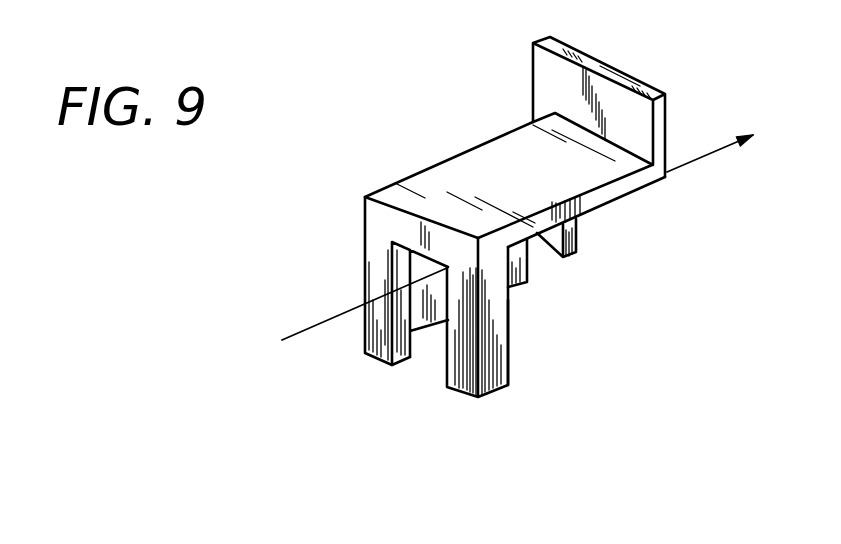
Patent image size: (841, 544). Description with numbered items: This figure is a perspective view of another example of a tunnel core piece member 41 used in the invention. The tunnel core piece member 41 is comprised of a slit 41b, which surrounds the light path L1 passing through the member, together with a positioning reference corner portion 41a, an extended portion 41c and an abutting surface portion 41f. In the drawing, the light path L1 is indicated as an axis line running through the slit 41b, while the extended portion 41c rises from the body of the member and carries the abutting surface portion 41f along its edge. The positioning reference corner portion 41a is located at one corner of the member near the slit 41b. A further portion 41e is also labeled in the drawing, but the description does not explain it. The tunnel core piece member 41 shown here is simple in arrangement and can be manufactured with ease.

The tunnel core piece member 41 is at (497, 219).
The positioning reference corner portion 41a is at (485, 352).
The slit 41b is at (445, 358).
The extended portion 41c is at (538, 69).
The side face of leg 41e is at (510, 315).
The abutting surface portion 41f is at (626, 84).
The light path L1 is at (305, 330).